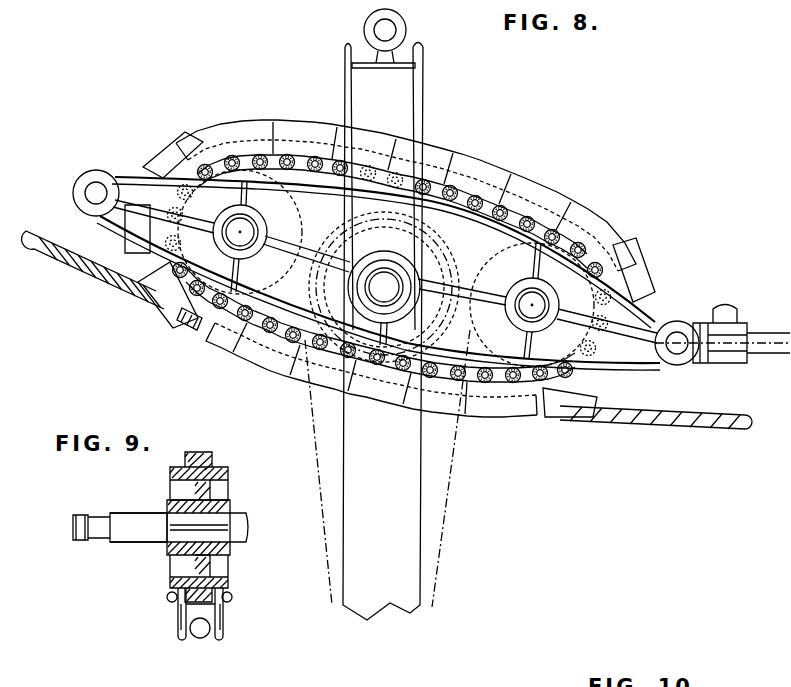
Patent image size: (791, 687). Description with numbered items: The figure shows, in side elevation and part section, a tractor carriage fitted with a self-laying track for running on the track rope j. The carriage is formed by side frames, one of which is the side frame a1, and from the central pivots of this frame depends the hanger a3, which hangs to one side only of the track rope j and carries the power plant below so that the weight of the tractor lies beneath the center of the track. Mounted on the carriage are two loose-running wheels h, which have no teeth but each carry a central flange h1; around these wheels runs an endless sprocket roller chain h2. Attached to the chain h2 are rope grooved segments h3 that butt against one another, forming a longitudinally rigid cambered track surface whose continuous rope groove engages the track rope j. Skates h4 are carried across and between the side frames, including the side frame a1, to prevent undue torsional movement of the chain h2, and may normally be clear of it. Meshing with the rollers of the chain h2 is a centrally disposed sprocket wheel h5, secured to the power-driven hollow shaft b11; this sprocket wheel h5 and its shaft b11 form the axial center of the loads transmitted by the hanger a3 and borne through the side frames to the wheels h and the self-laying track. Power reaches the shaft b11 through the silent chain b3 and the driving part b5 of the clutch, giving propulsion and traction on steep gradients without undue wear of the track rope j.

In FIG. 8, the side frame a1 is at (133, 173).
In FIG. 8, the depending hanger a3 is at (383, 314).
In FIG. 8, the hollow shaft b11 is at (384, 287).
In FIG. 9, the hollow shaft b11 is at (152, 535).
In FIG. 8, the silent chain b3 is at (438, 553).
In FIG. 10, the driving part of the clutch b5 is at (448, 686).
In FIG. 8, the loose-running wheel h is at (292, 202).
In FIG. 8, the central flange h1 is at (298, 222).
In FIG. 8, the endless sprocket roller chain h2 is at (224, 155).
In FIG. 9, the endless sprocket roller chain h2 is at (223, 602).
In FIG. 8, the rope grooved segment h3 is at (243, 123).
In FIG. 9, the rope grooved segment h3 is at (182, 628).
In FIG. 8, the skate h4 is at (478, 172).
In FIG. 8, the sprocket wheel h5 is at (303, 263).
In FIG. 9, the sprocket wheel h5 is at (208, 455).
In FIG. 8, the track rope j is at (107, 290).
In FIG. 9, the track rope j is at (201, 636).